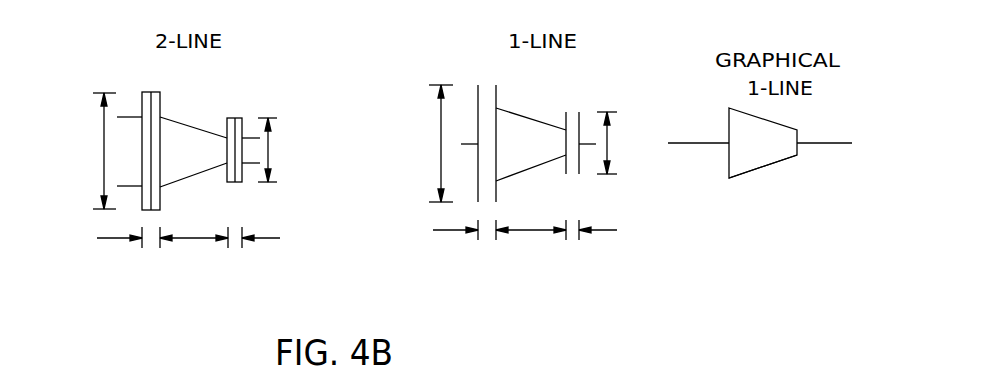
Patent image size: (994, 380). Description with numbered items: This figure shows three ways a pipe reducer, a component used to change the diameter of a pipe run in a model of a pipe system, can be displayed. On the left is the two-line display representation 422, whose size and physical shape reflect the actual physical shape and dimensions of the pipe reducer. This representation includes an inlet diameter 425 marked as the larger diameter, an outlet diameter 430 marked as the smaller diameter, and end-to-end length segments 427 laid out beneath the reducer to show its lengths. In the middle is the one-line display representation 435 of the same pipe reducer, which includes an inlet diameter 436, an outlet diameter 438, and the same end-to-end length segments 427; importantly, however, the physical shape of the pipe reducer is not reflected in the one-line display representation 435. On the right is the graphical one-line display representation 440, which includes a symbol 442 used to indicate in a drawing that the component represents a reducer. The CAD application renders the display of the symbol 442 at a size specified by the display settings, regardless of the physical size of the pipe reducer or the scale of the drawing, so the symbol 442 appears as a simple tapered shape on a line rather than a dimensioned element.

The 2-line display representation 422 is at (178, 117).
The inlet diameter 425 is at (66, 152).
The end-to-end length segments 427 is at (193, 275).
The outlet diameter 430 is at (287, 161).
The 1-line display representation 435 is at (513, 110).
The inlet diameter 436 is at (395, 140).
The outlet diameter 438 is at (632, 161).
The graphical 1-line display representation 440 is at (775, 186).
The symbol 442 is at (770, 118).